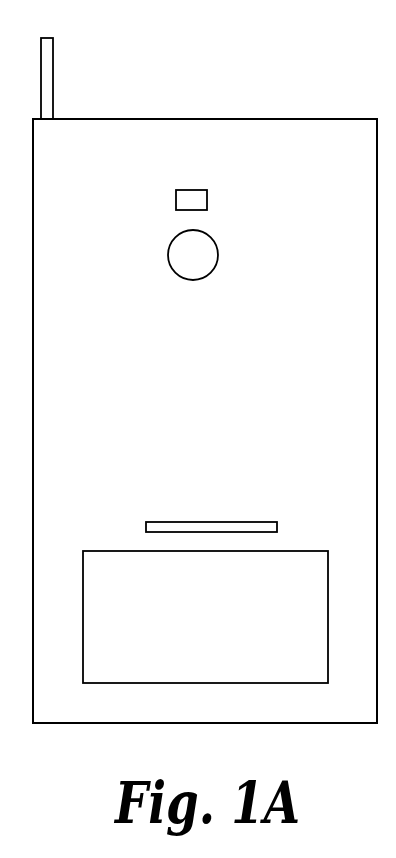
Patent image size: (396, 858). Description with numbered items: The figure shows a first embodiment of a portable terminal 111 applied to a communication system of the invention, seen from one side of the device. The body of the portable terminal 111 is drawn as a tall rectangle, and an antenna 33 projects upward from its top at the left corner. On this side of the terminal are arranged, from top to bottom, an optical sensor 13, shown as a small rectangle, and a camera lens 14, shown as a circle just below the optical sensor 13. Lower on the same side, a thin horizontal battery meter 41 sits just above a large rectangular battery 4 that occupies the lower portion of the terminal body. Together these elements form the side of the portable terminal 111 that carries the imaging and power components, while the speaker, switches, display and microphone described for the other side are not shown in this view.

The portable terminal 111 is at (277, 119).
The antenna 33 is at (53, 77).
The optical sensor 13 is at (193, 190).
The camera lens 14 is at (212, 239).
The battery meter 41 is at (196, 522).
The battery 4 is at (204, 626).